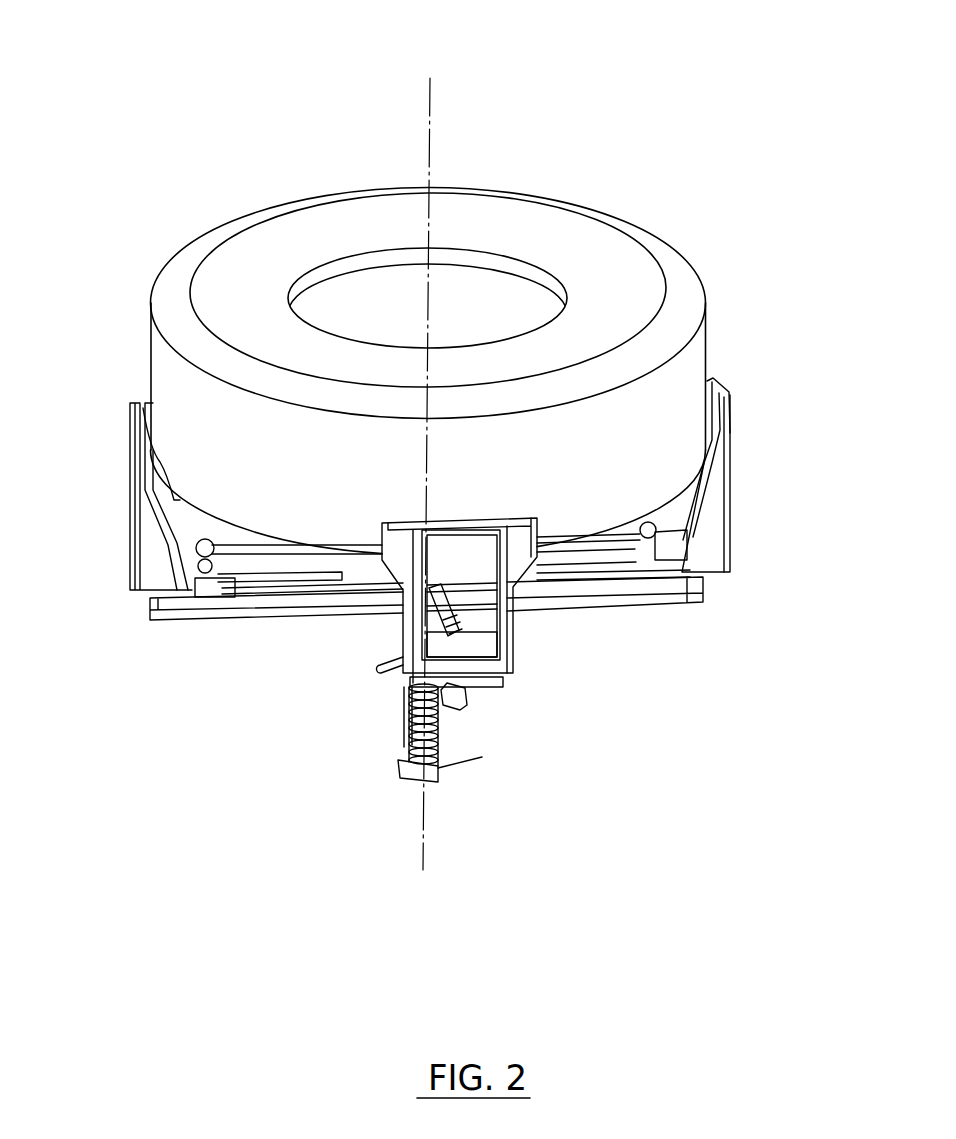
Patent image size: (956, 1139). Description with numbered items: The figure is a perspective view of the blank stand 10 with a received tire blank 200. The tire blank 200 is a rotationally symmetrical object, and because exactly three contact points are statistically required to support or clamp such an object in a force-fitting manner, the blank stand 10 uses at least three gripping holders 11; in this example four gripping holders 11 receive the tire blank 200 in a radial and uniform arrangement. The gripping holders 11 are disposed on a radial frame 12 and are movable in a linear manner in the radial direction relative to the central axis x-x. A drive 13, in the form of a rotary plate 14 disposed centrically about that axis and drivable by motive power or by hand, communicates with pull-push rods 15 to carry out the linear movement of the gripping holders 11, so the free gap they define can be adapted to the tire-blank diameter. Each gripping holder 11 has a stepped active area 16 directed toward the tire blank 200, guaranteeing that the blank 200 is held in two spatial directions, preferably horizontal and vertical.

The blank stand 10 is at (258, 139).
The tire blank 200 is at (200, 303).
The stepped active area 16 is at (130, 443).
The gripping holder 11 is at (160, 565).
The radial frame 12 is at (599, 595).
The drive 13 is at (351, 655).
The rotary plate 14 is at (355, 597).
The pull-push rods 15 is at (275, 560).